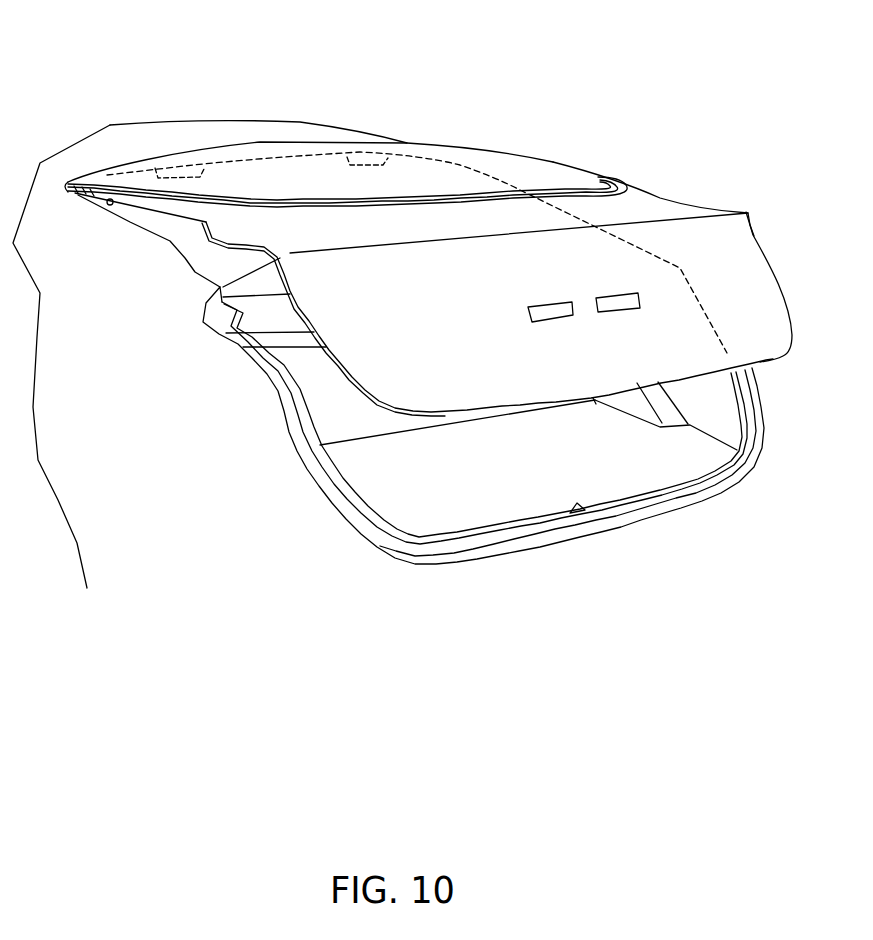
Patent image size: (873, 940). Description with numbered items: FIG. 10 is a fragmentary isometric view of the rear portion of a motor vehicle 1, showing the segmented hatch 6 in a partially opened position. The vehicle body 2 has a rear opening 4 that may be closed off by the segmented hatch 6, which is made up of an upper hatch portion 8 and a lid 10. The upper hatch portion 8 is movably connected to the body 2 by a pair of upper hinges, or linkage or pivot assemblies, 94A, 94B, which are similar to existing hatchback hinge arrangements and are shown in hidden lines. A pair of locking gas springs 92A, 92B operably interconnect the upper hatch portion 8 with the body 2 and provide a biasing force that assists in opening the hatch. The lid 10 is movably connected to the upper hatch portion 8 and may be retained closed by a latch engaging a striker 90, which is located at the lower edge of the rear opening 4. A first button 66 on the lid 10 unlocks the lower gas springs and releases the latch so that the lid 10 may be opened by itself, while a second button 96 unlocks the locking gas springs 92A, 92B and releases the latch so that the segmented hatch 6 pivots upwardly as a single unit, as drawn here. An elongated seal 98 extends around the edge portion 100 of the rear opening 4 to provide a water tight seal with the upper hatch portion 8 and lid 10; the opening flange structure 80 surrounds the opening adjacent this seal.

The motor vehicle 1 is at (334, 122).
The body 2 is at (245, 118).
The rear opening 4 is at (713, 407).
The segmented hatch 6 is at (676, 198).
The upper hatch portion 8 is at (552, 162).
The lid 10 is at (753, 233).
The first button 66 is at (553, 320).
The opening flange 80 is at (645, 462).
The striker 90 is at (573, 507).
The locking gas spring 92A is at (109, 205).
The locking gas spring 92B is at (472, 152).
The upper hinge 94A is at (188, 166).
The upper hinge 94B is at (370, 158).
The second button 96 is at (620, 308).
The elongated seal 98 is at (743, 460).
The edge portion 100 is at (723, 483).